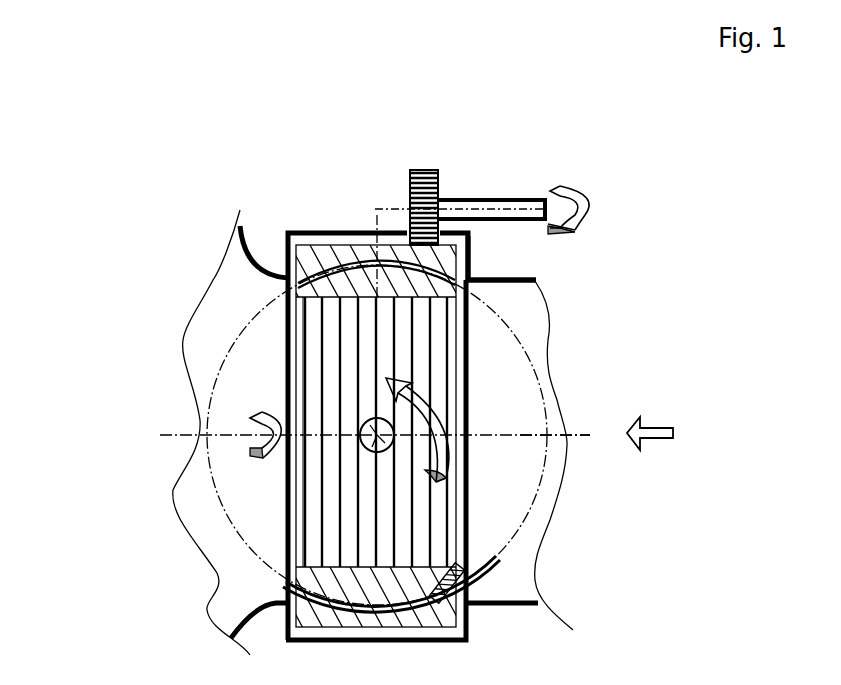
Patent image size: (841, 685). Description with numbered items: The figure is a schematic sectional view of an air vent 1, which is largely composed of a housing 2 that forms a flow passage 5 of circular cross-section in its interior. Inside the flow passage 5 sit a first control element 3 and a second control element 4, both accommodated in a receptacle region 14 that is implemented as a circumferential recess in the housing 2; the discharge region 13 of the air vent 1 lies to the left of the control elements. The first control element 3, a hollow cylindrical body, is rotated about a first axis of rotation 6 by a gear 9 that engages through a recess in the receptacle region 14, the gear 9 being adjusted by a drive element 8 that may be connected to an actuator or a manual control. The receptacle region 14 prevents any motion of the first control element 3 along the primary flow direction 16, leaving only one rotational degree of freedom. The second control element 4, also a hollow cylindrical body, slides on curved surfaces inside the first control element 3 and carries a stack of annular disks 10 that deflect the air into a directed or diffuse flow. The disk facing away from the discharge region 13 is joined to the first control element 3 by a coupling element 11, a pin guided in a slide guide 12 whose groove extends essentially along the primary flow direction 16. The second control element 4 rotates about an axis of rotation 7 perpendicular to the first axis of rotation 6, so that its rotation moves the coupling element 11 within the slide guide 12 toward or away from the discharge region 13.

The air vent 1 is at (310, 196).
The housing 2 is at (532, 279).
The first control element 3 is at (322, 272).
The second control element 4 is at (297, 297).
The flow passage 5 is at (520, 407).
The first axis of rotation 6 is at (587, 435).
The axis of rotation 7 is at (365, 447).
The drive element 8 is at (460, 195).
The gear 9 is at (438, 172).
The stack of annular disks 10 is at (437, 350).
The coupling element 11 is at (470, 608).
The slide guide 12 is at (493, 583).
The discharge region 13 is at (200, 353).
The receptacle region 14 is at (505, 237).
The primary flow direction 16 is at (660, 423).